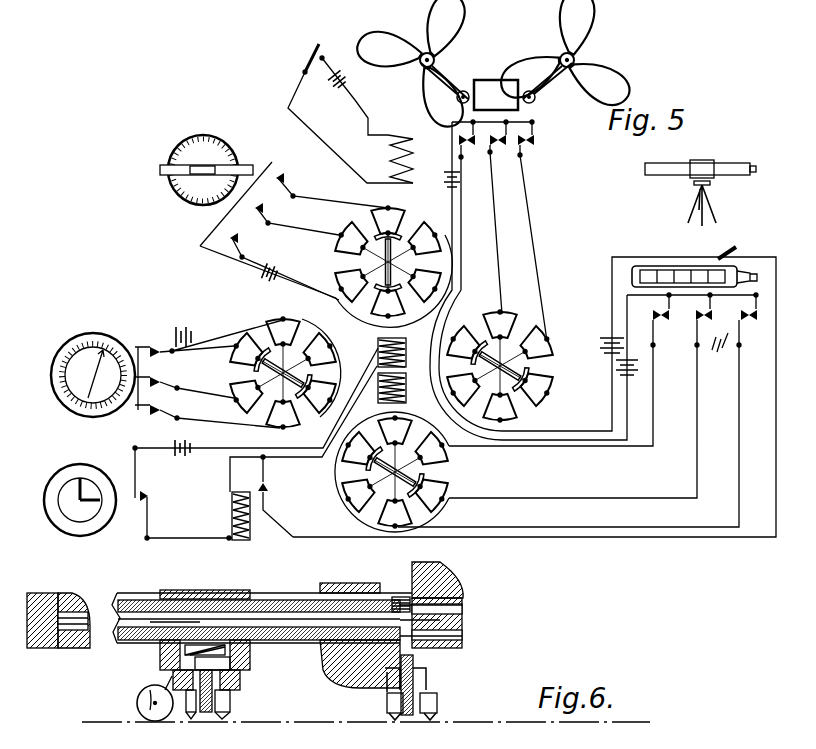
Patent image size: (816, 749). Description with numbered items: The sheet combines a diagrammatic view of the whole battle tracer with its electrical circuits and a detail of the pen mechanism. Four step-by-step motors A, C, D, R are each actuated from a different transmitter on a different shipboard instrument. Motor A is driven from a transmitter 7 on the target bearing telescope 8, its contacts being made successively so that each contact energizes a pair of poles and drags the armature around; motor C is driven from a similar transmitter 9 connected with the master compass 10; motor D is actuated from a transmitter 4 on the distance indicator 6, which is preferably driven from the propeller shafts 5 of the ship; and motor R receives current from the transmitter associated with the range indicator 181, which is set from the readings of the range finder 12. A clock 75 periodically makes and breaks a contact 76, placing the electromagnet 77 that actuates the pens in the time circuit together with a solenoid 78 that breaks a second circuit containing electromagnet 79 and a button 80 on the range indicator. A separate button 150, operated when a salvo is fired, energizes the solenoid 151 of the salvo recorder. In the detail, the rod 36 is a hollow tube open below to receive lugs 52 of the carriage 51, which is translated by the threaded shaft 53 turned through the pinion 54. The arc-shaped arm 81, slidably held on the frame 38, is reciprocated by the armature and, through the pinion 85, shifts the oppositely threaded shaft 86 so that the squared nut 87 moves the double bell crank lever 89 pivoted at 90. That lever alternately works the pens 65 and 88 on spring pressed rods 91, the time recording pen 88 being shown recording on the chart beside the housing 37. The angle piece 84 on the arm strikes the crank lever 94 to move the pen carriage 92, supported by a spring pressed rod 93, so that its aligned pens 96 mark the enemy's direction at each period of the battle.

In FIG. 5, the transmitter 4 is at (533, 140).
In FIG. 5, the propeller shafts 5 is at (420, 70).
In FIG. 5, the distance indicator 6 is at (496, 95).
In FIG. 5, the transmitter 7 is at (280, 172).
In FIG. 5, the target bearing telescope 8 is at (223, 141).
In FIG. 5, the transmitter 9 is at (160, 348).
In FIG. 5, the master compass 10 is at (76, 342).
In FIG. 5, the range finder 12 is at (699, 165).
In FIG. 5, the clock 75 is at (65, 474).
In FIG. 5, the contact 76 is at (148, 497).
In FIG. 5, the electromagnet 77 is at (406, 352).
In FIG. 5, the solenoid 78 is at (232, 512).
In FIG. 5, the electromagnet 79 is at (406, 387).
In FIG. 5, the button 80 is at (736, 250).
In FIG. 5, the button 150 is at (305, 72).
In FIG. 5, the solenoid 151 is at (412, 153).
In FIG. 5, the range indicator 181 is at (635, 289).
In FIG. 5, the motor A is at (441, 236).
In FIG. 5, the motor C is at (265, 318).
In FIG. 5, the motor D is at (549, 345).
In FIG. 5, the motor R is at (448, 470).
In FIG. 6, the rod 36 is at (135, 593).
In FIG. 6, the housing 37 is at (360, 664).
In FIG. 6, the frame 38 is at (412, 573).
In FIG. 6, the carriage 51 is at (250, 660).
In FIG. 6, the lugs 52 is at (205, 590).
In FIG. 6, the threaded shaft 53 is at (292, 593).
In FIG. 6, the pinion 54 is at (401, 597).
In FIG. 6, the pen 65 is at (191, 719).
In FIG. 6, the arc-shaped arm 81 is at (441, 631).
In FIG. 6, the angle piece 84 is at (412, 680).
In FIG. 6, the pinion 85 is at (410, 620).
In FIG. 6, the threaded shaft 86 is at (90, 622).
In FIG. 6, the nut 87 is at (166, 621).
In FIG. 6, the pen 88 is at (223, 719).
In FIG. 6, the double bell crank lever 89 is at (207, 648).
In FIG. 6, the pivot 90 is at (195, 663).
In FIG. 6, the spring pressed rods 91 is at (233, 697).
In FIG. 6, the pen carriage 92 is at (437, 703).
In FIG. 6, the spring pressed rod 93 is at (415, 676).
In FIG. 6, the crank lever 94 is at (428, 684).
In FIG. 6, the pens 96 is at (395, 721).